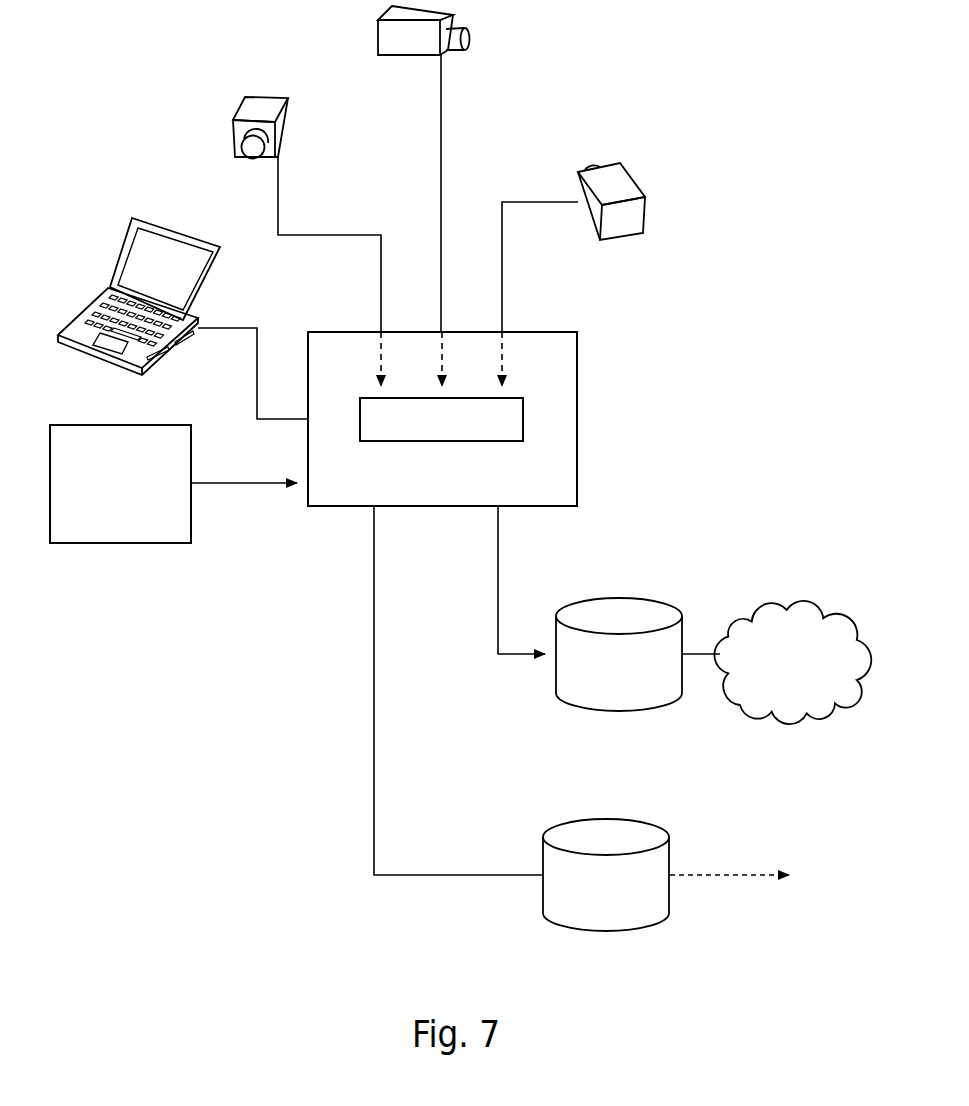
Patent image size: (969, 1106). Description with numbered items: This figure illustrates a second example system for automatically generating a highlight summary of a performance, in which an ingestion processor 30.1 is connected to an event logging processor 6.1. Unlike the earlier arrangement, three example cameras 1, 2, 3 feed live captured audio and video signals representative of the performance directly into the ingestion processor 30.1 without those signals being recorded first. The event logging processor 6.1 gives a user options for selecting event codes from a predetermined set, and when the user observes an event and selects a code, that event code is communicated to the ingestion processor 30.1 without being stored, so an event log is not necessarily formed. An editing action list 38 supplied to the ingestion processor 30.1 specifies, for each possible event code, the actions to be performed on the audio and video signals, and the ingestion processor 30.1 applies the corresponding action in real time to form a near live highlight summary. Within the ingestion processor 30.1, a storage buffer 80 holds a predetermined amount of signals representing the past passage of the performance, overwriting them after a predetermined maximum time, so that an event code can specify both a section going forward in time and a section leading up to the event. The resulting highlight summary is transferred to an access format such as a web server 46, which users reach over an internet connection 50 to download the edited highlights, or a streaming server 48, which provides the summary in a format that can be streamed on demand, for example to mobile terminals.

The camera 1 is at (260, 127).
The camera 2 is at (424, 31).
The camera 3 is at (611, 201).
The event logging processor 6.1 is at (133, 220).
The ingestion processor 30.1 is at (577, 382).
The storage buffer 80 is at (523, 419).
The editing action list 38 is at (120, 543).
The web server 46 is at (620, 708).
The streaming server 48 is at (607, 930).
The connection 50 is at (792, 718).